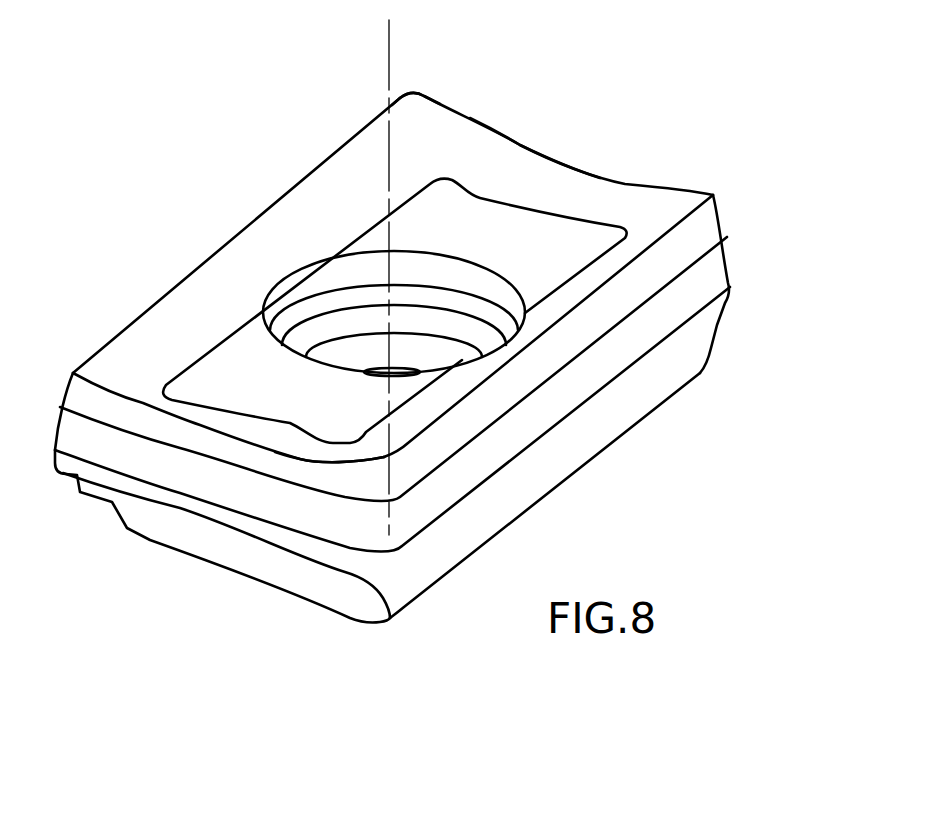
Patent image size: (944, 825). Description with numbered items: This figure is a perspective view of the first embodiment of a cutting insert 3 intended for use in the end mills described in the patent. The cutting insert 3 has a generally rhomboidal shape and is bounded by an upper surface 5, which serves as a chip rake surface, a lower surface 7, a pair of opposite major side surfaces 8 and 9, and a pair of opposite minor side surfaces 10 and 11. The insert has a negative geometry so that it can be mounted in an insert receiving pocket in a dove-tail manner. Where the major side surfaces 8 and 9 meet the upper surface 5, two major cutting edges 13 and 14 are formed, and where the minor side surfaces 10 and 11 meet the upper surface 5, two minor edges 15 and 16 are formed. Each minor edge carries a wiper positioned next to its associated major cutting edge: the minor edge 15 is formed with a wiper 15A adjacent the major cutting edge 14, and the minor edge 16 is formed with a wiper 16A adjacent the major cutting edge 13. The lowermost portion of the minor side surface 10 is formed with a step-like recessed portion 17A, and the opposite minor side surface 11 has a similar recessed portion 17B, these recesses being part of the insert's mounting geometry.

The cutting insert 3 is at (640, 101).
The upper surface 5 is at (421, 158).
The lower surface 7 is at (550, 495).
The major side surface 8 is at (190, 197).
The major side surface 9 is at (668, 446).
The minor side surface 10 is at (140, 592).
The minor side surface 11 is at (565, 133).
The major cutting edge 13 is at (163, 288).
The major cutting edge 14 is at (672, 237).
The minor edge 15 is at (213, 434).
The wiper 15A is at (323, 463).
The minor edge 16 is at (627, 178).
The wiper 16A is at (462, 113).
The recessed portion 17A is at (227, 540).
The recessed portion 17B is at (725, 343).